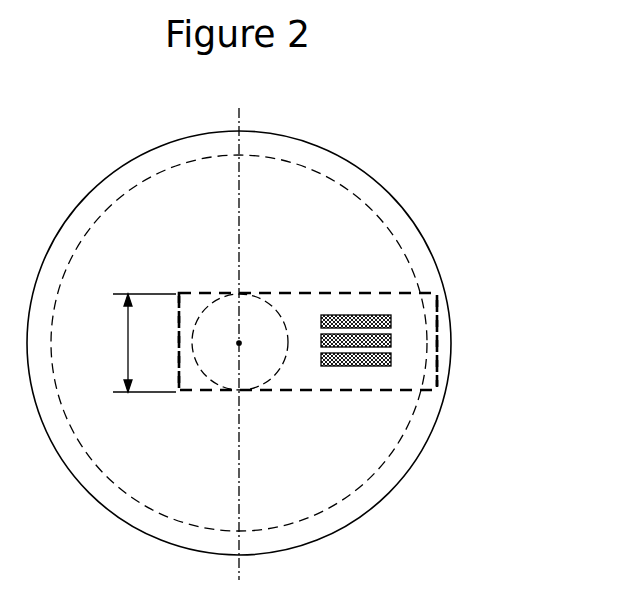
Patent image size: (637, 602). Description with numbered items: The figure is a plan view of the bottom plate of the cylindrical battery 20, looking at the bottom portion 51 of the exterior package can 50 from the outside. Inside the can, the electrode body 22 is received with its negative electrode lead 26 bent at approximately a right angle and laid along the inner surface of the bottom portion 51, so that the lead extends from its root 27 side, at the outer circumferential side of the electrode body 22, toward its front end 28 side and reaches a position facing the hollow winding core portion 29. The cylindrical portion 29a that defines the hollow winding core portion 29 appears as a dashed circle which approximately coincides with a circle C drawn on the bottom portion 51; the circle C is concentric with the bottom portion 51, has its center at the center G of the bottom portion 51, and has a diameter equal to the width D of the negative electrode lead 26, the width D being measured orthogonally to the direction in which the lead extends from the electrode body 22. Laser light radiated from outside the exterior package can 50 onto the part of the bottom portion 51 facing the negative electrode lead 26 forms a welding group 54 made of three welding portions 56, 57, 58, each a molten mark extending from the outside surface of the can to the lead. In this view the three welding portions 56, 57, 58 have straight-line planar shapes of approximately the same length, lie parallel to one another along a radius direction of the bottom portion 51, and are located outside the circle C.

The battery 20 is at (417, 134).
The electrode body 22 is at (165, 204).
The negative electrode lead 26 is at (296, 291).
The root 27 is at (441, 300).
The front end 28 is at (176, 366).
The hollow winding core portion 29 is at (260, 356).
The cylindrical portion 29a is at (198, 292).
The exterior package can 50 is at (386, 186).
The bottom portion 51 is at (302, 192).
The welding group 54 is at (370, 315).
The welding portion 56 is at (391, 321).
The welding portion 57 is at (391, 340).
The welding portion 58 is at (391, 360).
The width D is at (134, 334).
The center G is at (238, 344).
The circle C is at (287, 358).